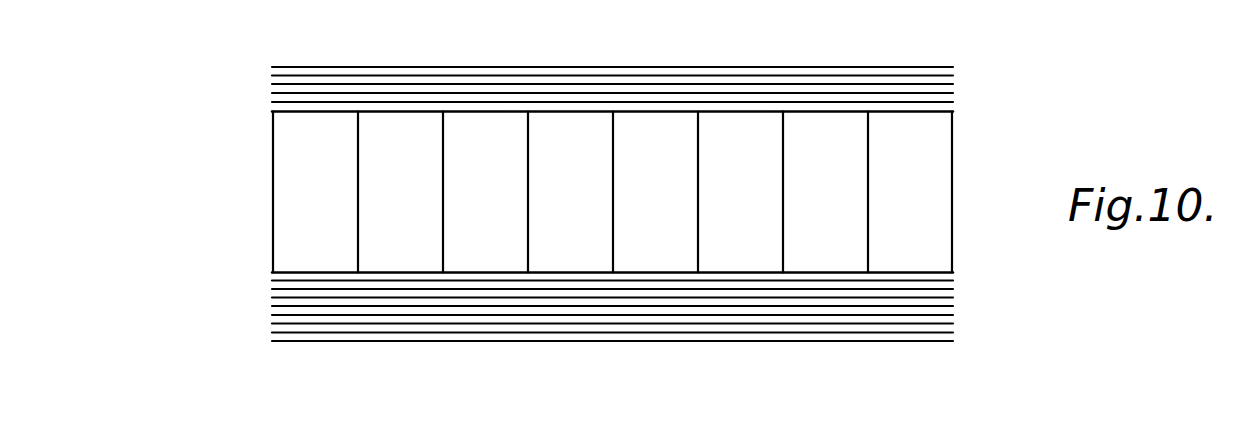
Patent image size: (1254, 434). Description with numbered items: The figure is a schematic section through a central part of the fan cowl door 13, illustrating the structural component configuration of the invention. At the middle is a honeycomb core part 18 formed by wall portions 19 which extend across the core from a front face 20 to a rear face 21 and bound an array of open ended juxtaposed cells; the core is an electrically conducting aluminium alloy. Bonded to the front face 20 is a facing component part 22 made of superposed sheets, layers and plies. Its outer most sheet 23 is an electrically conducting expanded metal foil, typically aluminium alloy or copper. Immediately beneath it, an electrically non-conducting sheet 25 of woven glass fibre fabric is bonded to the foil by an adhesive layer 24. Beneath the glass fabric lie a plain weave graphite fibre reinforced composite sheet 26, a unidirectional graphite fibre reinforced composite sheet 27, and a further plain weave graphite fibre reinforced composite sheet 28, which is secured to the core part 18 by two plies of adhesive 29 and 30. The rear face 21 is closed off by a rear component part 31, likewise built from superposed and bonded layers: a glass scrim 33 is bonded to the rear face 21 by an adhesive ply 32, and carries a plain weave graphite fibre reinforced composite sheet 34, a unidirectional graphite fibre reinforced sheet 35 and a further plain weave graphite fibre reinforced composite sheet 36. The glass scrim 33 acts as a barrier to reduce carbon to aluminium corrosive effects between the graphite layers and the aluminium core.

The fan cowl door 13 is at (600, 56).
The honeycomb core part 18 is at (954, 205).
The wall portions 19 is at (733, 121).
The front face 20 is at (910, 272).
The rear face 21 is at (906, 113).
The facing component part 22 is at (956, 330).
The outer most sheet 23 is at (282, 341).
The adhesive layer 24 is at (271, 333).
The electrically non-conducting sheet 25 is at (272, 324).
The plain weave graphite fibre reinforced composite sheet 26 is at (272, 314).
The unidirectional graphite fibre reinforced composite sheet 27 is at (272, 306).
The further plain weave graphite fibre reinforced composite sheet 28 is at (272, 297).
The adhesive ply 29 is at (272, 288).
The adhesive ply 30 is at (272, 279).
The rear component part 31 is at (956, 84).
The adhesive ply 32 is at (271, 104).
The glass scrim 33 is at (271, 95).
The plain weave graphite fibre reinforced composite sheet 34 is at (271, 86).
The unidirectional graphite fibre reinforced sheet 35 is at (271, 74).
The further plain weave graphite fibre reinforced composite sheet 36 is at (271, 67).